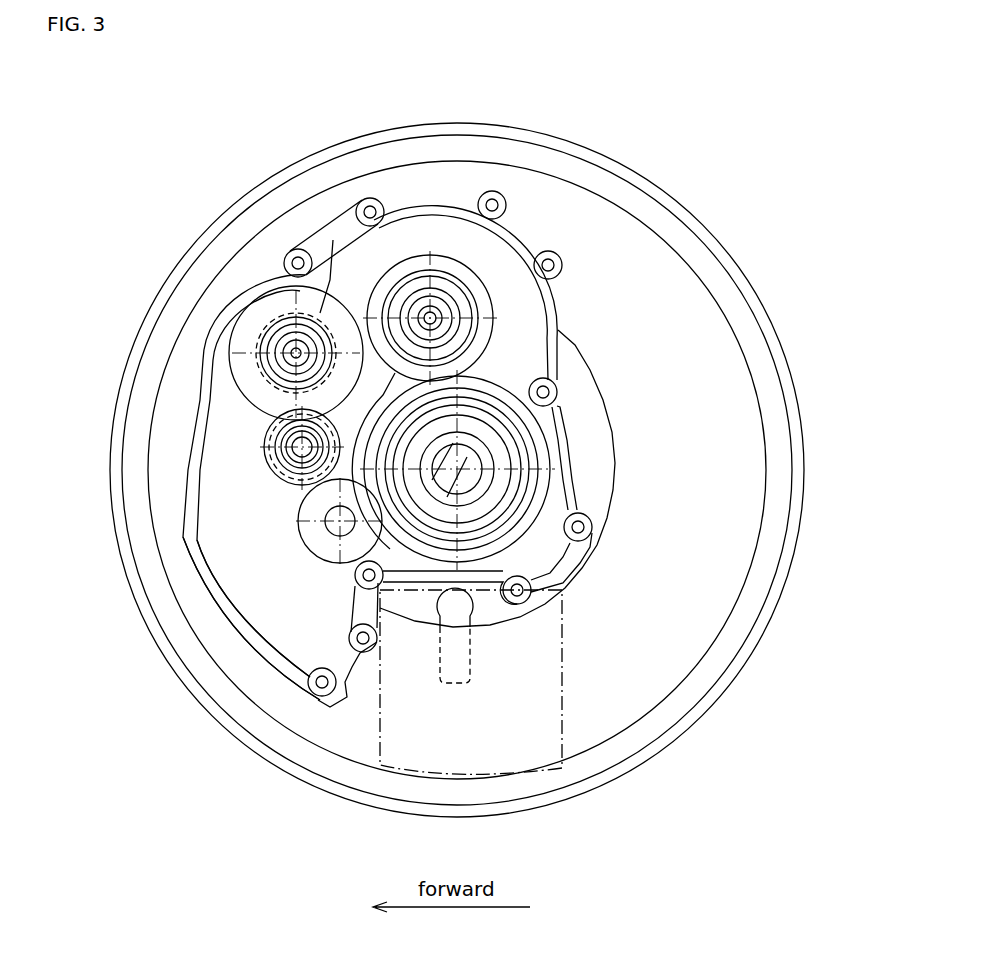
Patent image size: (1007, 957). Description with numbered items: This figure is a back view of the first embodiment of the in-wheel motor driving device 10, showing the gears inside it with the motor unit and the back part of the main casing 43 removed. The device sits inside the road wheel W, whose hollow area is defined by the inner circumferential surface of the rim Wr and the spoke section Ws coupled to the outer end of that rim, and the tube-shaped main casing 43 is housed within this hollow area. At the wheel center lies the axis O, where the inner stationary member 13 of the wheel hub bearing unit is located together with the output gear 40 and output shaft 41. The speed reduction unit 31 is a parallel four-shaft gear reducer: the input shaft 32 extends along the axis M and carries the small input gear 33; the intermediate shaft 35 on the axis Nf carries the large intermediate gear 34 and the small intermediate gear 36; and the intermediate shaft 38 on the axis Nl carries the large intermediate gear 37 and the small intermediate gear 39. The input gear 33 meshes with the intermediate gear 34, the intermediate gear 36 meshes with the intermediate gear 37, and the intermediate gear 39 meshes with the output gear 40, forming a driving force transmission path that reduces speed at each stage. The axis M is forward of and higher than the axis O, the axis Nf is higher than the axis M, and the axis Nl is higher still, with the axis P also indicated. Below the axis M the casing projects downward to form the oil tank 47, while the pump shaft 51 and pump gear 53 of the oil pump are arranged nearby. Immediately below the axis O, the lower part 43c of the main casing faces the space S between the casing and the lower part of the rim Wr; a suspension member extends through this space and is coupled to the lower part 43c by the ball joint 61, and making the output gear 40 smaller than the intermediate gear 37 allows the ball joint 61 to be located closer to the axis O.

The in-wheel motor driving device 10 is at (570, 243).
The inner stationary member 13 is at (495, 476).
The speed reduction unit 31 is at (563, 399).
The input shaft 32 is at (266, 440).
The input gear 33 is at (272, 424).
The intermediate gear 34 is at (234, 326).
The intermediate shaft 35 is at (262, 358).
The intermediate gear 36 is at (272, 318).
The intermediate gear 37 is at (426, 290).
The intermediate shaft 38 is at (440, 300).
The intermediate gear 39 is at (497, 283).
The output gear 40 is at (537, 423).
The output shaft 41 is at (513, 453).
The main casing 43 is at (340, 238).
The lower part of main casing 43c is at (517, 628).
The oil tank 47 is at (307, 647).
The pump shaft 51 is at (336, 524).
The pump gear 53 is at (310, 550).
The ball joint 61 is at (505, 627).
The axis M is at (290, 448).
The axis Nf is at (294, 351).
The axis Nl is at (422, 305).
The axis O is at (460, 472).
The axis P is at (386, 578).
The space S is at (568, 742).
The road wheel W is at (790, 347).
The rim Wr is at (750, 380).
The spoke section Ws is at (735, 468).